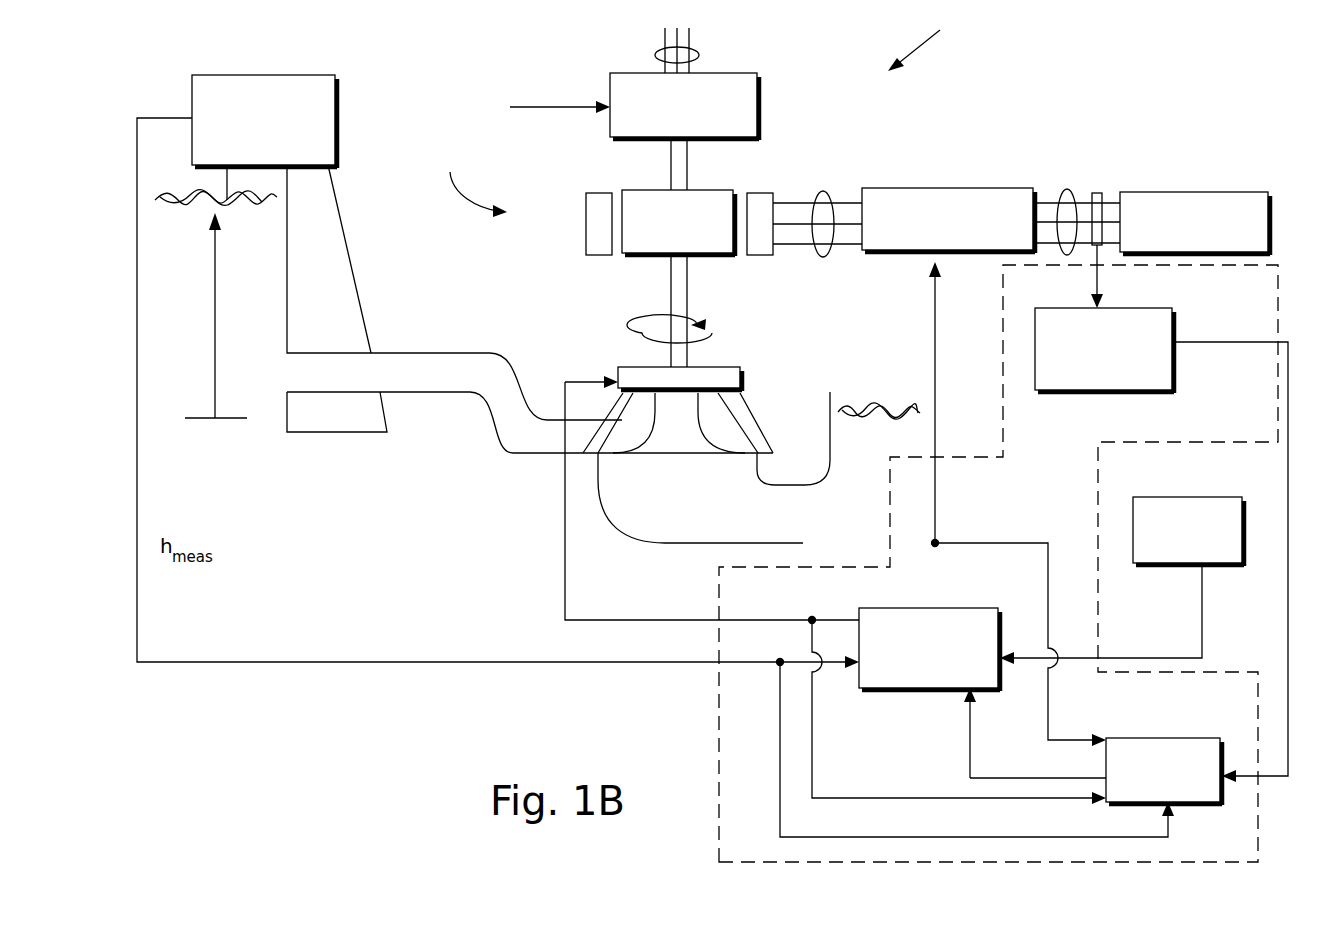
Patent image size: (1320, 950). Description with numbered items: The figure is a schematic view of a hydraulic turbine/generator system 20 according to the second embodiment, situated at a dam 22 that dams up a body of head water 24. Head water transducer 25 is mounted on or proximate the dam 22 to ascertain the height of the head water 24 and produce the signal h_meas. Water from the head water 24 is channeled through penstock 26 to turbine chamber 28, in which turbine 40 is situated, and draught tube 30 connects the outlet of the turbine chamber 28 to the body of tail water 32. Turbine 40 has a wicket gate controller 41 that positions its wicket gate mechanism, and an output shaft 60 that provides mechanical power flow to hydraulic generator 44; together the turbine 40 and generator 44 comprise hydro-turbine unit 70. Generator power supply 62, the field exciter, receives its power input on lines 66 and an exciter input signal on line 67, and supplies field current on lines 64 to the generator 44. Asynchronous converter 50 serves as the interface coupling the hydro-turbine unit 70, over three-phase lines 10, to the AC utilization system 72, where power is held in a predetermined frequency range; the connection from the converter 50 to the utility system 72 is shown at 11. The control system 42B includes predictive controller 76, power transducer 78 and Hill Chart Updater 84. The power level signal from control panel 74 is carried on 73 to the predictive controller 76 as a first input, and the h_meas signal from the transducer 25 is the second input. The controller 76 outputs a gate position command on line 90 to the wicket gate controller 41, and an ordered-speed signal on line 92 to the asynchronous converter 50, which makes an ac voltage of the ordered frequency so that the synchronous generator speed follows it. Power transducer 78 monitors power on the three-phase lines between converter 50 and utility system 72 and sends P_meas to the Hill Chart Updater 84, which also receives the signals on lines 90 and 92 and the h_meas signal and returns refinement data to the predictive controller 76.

The hydraulic turbine/generator system 20 is at (929, 39).
The head water transducer 25 is at (274, 75).
The body of head water 24 is at (188, 287).
The dam 22 is at (355, 280).
The penstock 26 is at (506, 362).
The gate position command line 90 is at (582, 620).
The generator power supply 62 is at (762, 95).
The power input lines 66 is at (657, 55).
The exciter input signal line 67 is at (536, 107).
The field current lines 64 is at (669, 173).
The hydraulic generator 44 is at (720, 192).
The hydro-turbine unit 70 is at (473, 181).
The output shaft 60 is at (663, 311).
The wicket gate controller 41 is at (728, 370).
The turbine 40 is at (693, 427).
The turbine chamber 28 is at (767, 437).
The draught tube 30 is at (788, 485).
The body of tail water 32 is at (892, 451).
The asynchronous converter 50 is at (935, 189).
The three-phase lines 10 is at (822, 257).
The power system connection 11 is at (1068, 190).
The utilization system 72 is at (1235, 197).
The power transducer 78 is at (1122, 313).
The control panel 74 is at (1163, 498).
The utility requirements signal line 73 is at (1200, 620).
The predictive controller 76 is at (878, 610).
The ordered speed signal line 92 is at (937, 364).
The Hill Chart Updater 84 is at (1185, 803).
The control system 42B is at (714, 800).